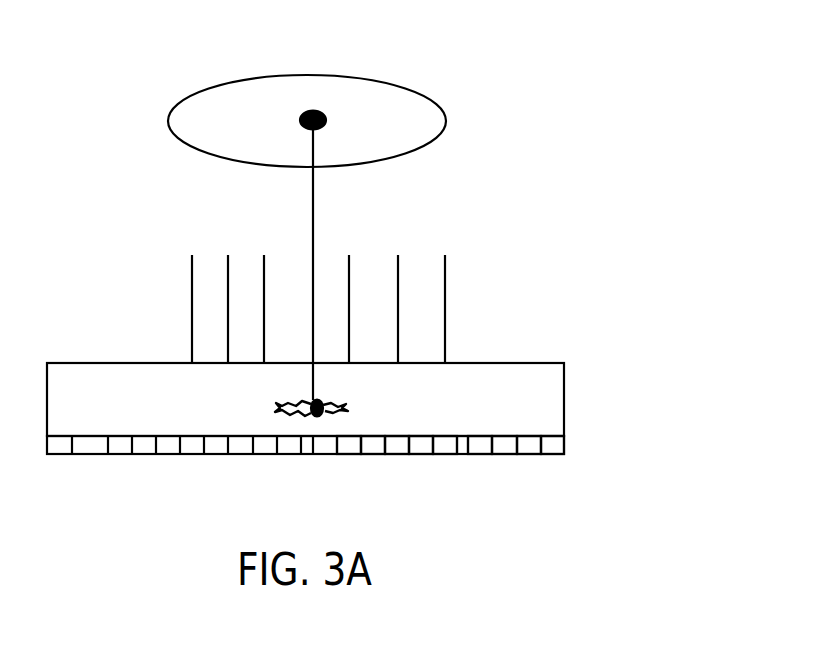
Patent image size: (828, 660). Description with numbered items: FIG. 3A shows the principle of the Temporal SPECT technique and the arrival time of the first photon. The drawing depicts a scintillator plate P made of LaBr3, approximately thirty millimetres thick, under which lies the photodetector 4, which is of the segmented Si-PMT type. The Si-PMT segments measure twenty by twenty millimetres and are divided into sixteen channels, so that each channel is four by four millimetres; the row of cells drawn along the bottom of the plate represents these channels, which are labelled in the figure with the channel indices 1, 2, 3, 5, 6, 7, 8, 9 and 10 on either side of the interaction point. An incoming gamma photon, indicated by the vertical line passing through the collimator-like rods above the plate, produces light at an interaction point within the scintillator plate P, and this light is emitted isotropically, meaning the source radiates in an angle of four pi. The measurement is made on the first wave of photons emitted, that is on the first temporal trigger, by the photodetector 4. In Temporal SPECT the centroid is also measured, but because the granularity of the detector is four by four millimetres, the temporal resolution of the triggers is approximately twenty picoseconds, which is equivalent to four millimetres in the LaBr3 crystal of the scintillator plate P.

The scintillator plate p is at (565, 405).
The photodetector 4 is at (565, 452).
The pixel 1 is at (555, 470).
The pixel 2 is at (533, 470).
The pixel 3 is at (509, 470).
The pixel 5 is at (480, 470).
The pixel 6 is at (445, 472).
The pixel 7 is at (421, 472).
The pixel 8 is at (397, 472).
The pixel 9 is at (375, 472).
The pixel 10 is at (356, 472).